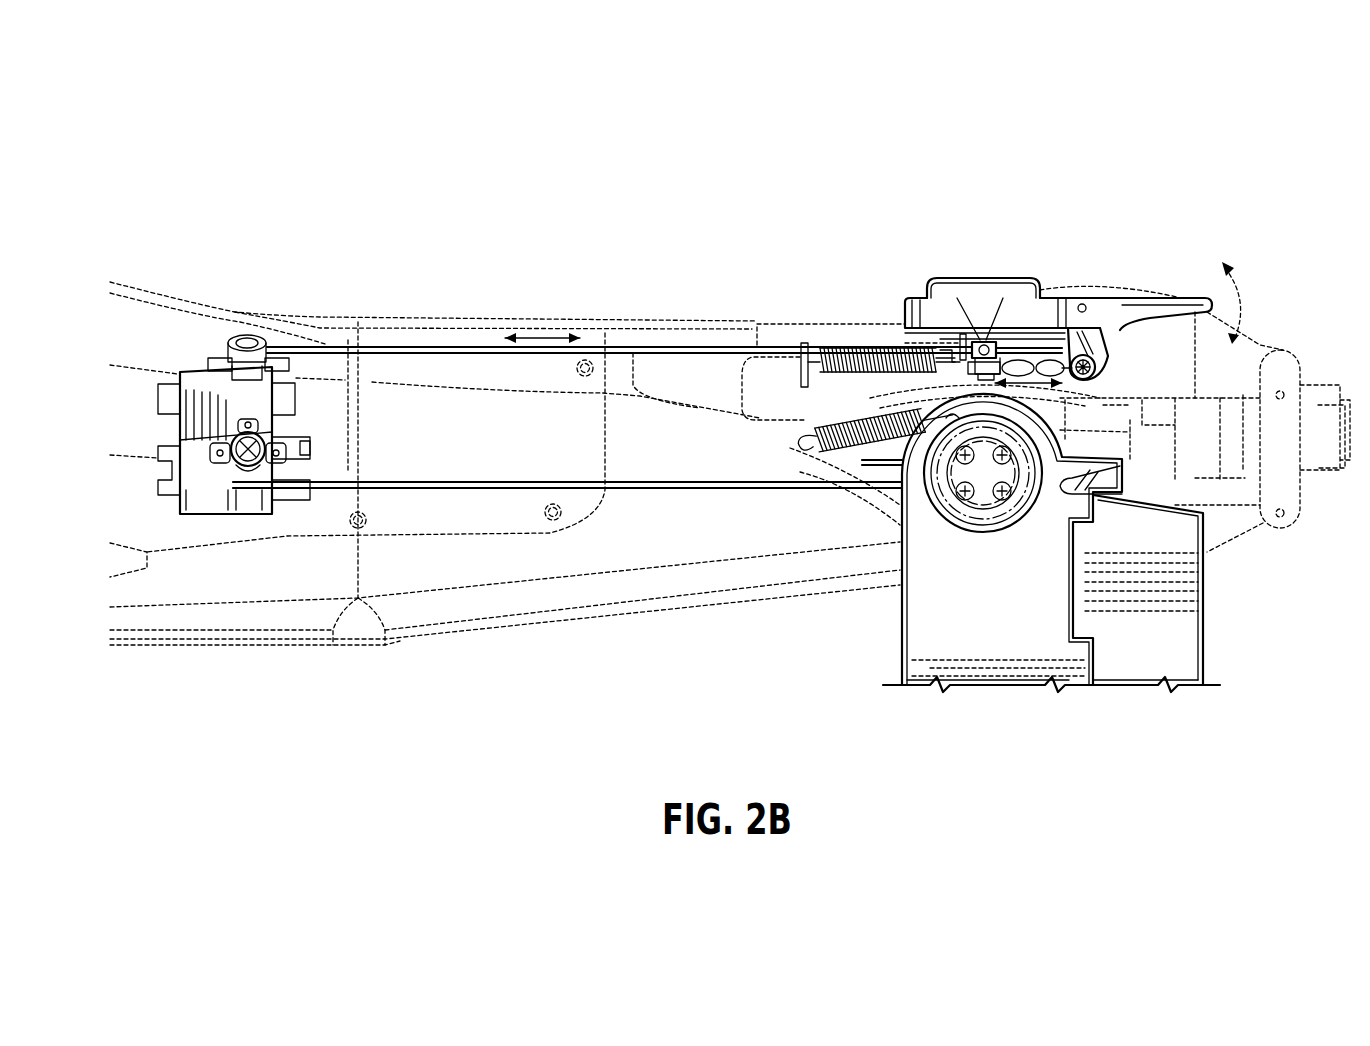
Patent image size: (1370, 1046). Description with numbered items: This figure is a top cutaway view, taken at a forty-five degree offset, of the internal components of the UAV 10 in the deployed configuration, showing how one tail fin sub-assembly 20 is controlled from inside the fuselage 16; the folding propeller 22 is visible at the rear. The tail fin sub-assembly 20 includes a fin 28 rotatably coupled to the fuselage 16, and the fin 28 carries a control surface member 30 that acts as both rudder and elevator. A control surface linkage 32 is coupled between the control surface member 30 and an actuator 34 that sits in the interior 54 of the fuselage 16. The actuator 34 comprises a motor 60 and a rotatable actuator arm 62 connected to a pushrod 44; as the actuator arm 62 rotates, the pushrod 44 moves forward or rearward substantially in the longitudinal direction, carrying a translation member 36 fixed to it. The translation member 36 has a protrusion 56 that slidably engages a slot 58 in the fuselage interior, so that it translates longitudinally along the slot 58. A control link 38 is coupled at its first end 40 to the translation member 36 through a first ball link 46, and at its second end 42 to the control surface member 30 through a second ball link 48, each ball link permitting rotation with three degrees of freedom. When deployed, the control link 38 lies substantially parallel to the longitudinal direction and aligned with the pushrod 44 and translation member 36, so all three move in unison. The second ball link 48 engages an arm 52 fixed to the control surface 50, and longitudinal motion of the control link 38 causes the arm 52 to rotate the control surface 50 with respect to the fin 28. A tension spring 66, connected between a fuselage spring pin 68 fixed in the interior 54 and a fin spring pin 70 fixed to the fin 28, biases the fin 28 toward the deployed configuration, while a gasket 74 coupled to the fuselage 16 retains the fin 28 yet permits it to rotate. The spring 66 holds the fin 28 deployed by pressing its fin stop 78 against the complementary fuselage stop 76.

The UAV 10 is at (345, 170).
The fuselage 16 is at (390, 320).
The tail fin sub-assembly 20 is at (902, 624).
The propeller 22 is at (1263, 524).
The fin 28 is at (1050, 310).
The control surface member 30 is at (1118, 312).
The control surface linkage 32 is at (985, 340).
The actuator 34 is at (226, 505).
The translation member 36 is at (935, 328).
The control link 38 is at (1020, 358).
The first end 40 is at (978, 374).
The second end 42 is at (1096, 374).
The pushrod 44 is at (586, 348).
The first ball link 46 is at (960, 364).
The second ball link 48 is at (1102, 368).
The control surface 50 is at (1185, 300).
The arm 52 is at (1110, 342).
The interior 54 is at (478, 366).
The protrusion 56 is at (988, 342).
The slot 58 is at (980, 342).
The motor 60 is at (205, 505).
The actuator arm 62 is at (252, 502).
The tension spring 66 is at (836, 348).
The fuselage spring pin 68 is at (798, 374).
The fin spring pin 70 is at (955, 348).
The gasket 74 is at (945, 282).
The fuselage stop 76 is at (1107, 462).
The fin stop 78 is at (1112, 486).